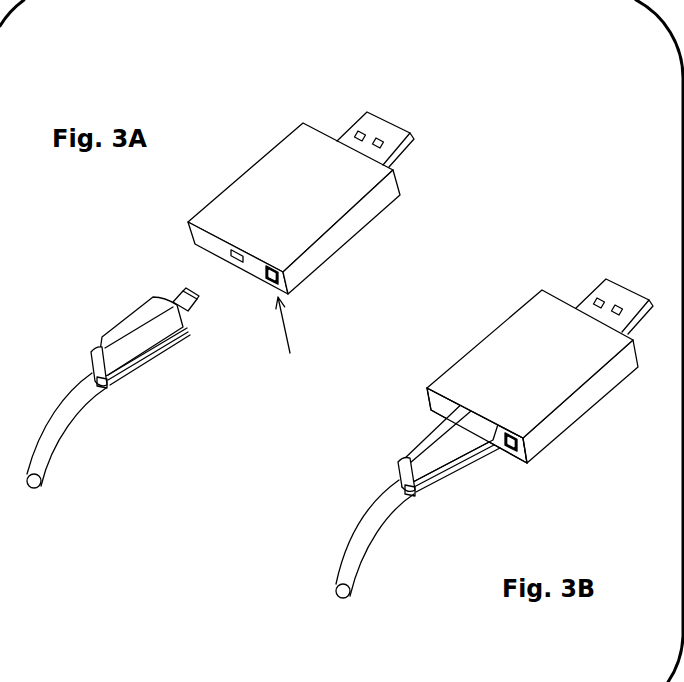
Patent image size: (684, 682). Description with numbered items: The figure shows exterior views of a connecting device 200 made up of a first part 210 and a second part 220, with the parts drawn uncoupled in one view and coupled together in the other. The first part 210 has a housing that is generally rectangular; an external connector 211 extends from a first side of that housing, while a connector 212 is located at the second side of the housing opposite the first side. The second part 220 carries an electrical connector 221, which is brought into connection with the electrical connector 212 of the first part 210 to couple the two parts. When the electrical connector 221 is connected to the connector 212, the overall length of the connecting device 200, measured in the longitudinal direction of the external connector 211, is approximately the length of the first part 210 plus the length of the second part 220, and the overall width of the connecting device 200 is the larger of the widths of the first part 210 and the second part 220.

In FIG. 3A, the connecting device 200 is at (293, 526).
In FIG. 3A, the first part 210 is at (277, 208).
In FIG. 3B, the first part 210 is at (494, 401).
In FIG. 3A, the external connector 211 is at (375, 127).
In FIG. 3B, the external connector 211 is at (617, 300).
In FIG. 3A, the connector 212 is at (227, 252).
In FIG. 3A, the second part 220 is at (135, 388).
In FIG. 3B, the second part 220 is at (463, 460).
In FIG. 3A, the electrical connector 221 is at (192, 312).